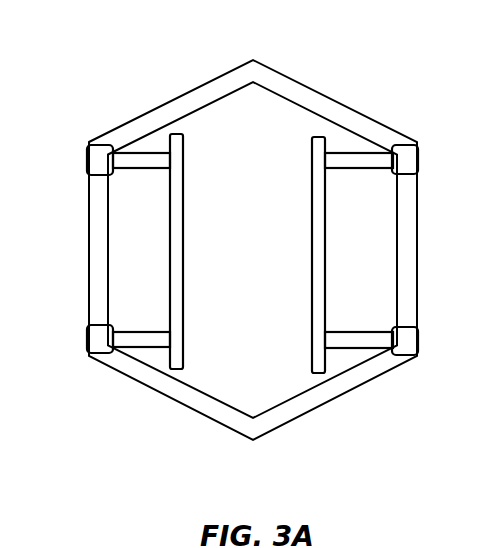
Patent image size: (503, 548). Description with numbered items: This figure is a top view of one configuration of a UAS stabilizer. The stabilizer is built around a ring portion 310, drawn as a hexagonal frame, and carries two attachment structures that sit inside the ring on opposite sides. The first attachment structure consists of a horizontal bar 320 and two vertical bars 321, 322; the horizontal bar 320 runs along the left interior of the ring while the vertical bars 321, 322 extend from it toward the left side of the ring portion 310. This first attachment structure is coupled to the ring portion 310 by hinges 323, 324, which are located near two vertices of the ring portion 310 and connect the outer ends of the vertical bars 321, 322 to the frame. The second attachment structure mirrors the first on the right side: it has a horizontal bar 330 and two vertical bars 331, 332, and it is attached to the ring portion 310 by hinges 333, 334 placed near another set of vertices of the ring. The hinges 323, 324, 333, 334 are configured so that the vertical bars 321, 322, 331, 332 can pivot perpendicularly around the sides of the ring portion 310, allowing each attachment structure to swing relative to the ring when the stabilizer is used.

The ring portion 310 is at (290, 78).
The horizontal bar 320 is at (181, 250).
The vertical bar 321 is at (137, 170).
The vertical bar 322 is at (147, 332).
The hinge 323 is at (86, 152).
The hinge 324 is at (87, 328).
The horizontal bar 330 is at (310, 292).
The vertical bar 331 is at (357, 169).
The vertical bar 332 is at (365, 332).
The hinge 333 is at (419, 157).
The hinge 334 is at (419, 335).